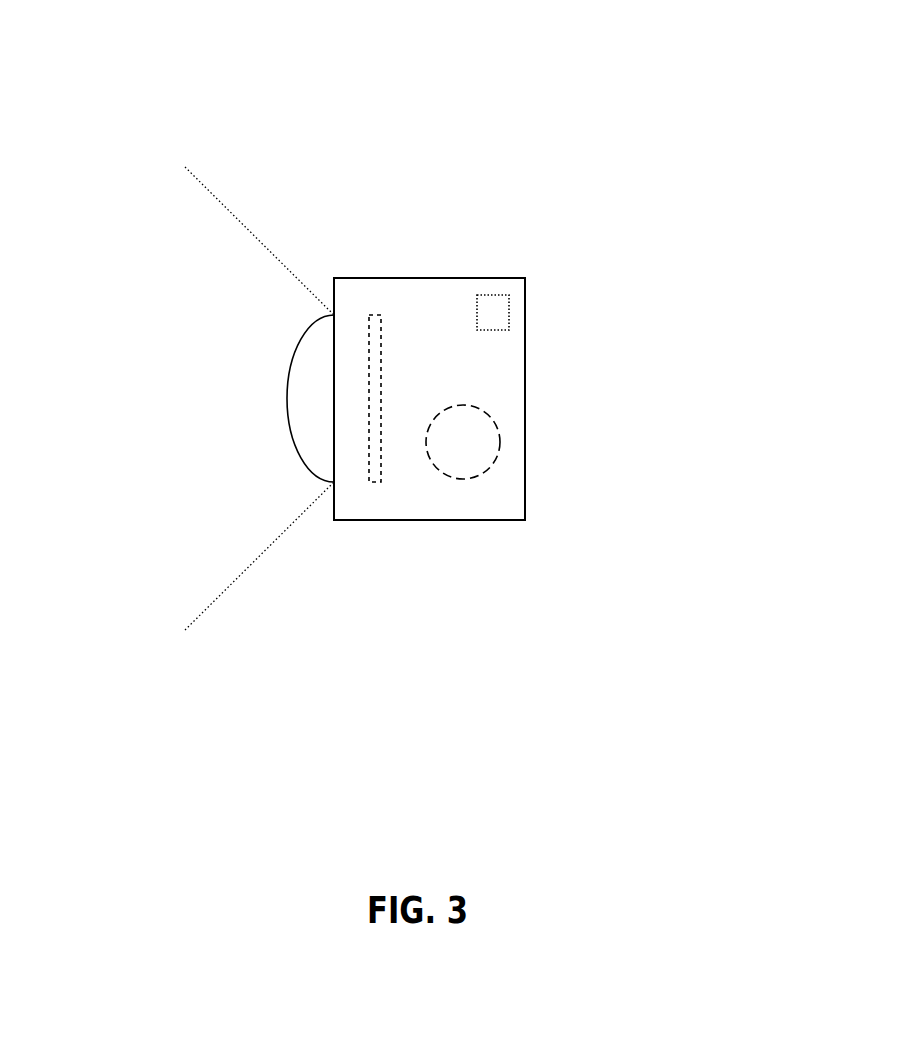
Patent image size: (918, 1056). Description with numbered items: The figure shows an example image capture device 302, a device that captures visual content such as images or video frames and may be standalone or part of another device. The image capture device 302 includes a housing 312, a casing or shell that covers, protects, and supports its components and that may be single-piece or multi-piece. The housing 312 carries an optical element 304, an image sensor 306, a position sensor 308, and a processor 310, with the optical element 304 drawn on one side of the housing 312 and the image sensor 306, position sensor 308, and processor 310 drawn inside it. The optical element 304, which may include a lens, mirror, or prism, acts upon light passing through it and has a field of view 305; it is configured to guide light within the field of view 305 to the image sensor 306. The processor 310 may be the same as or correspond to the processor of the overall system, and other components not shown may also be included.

The image capture device 302 is at (493, 139).
The optical element 304 is at (308, 470).
The field of view 305 is at (242, 545).
The image sensor 306 is at (376, 315).
The position sensor 308 is at (509, 317).
The processor 310 is at (500, 442).
The housing 312 is at (440, 520).